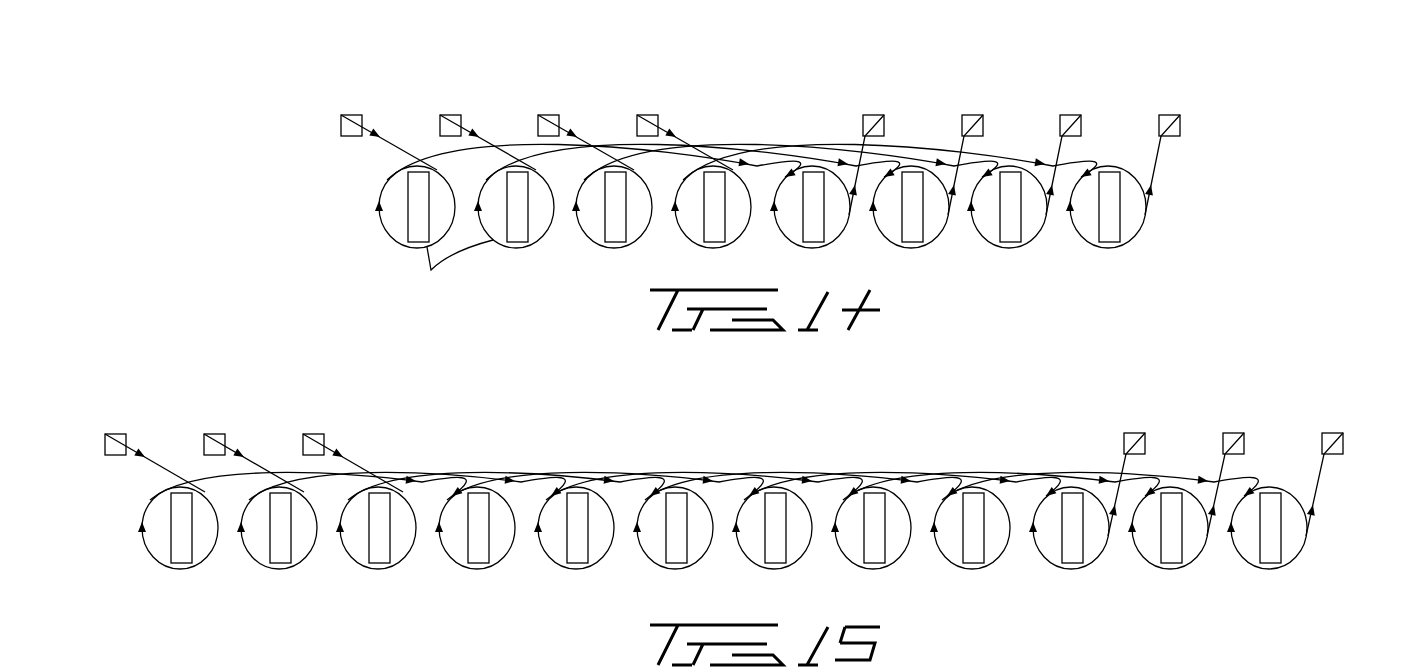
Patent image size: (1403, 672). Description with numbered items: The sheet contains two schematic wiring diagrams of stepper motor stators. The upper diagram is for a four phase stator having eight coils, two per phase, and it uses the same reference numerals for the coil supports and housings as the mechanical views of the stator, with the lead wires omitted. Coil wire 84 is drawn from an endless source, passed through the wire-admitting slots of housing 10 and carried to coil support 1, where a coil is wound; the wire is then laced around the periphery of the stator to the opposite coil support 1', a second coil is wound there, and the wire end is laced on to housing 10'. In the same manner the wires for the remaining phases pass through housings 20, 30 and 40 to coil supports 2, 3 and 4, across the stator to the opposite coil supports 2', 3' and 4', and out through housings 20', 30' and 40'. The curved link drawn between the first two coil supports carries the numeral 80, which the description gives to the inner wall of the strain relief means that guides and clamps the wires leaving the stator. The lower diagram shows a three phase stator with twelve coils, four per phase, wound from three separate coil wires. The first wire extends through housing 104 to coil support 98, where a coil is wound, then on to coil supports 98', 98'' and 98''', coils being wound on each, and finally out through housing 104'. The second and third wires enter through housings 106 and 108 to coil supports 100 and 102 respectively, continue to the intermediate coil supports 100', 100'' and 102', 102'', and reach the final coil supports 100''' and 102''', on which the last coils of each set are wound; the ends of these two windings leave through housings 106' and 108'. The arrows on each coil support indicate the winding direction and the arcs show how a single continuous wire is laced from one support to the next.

In FIG. 14, the housing 10 is at (389, 111).
In FIG. 14, the housing 20 is at (488, 111).
In FIG. 14, the housing 30 is at (586, 111).
In FIG. 14, the housing 40 is at (685, 111).
In FIG. 14, the housing 10' is at (890, 134).
In FIG. 14, the housing 20' is at (989, 134).
In FIG. 14, the housing 30' is at (1087, 134).
In FIG. 14, the housing 40' is at (1186, 134).
In FIG. 14, the coil support 1 is at (415, 224).
In FIG. 14, the coil support 2 is at (514, 224).
In FIG. 14, the coil support 3 is at (612, 224).
In FIG. 14, the coil support 4 is at (711, 224).
In FIG. 14, the coil support 1' is at (810, 224).
In FIG. 14, the coil support 2' is at (909, 224).
In FIG. 14, the coil support 3' is at (1007, 224).
In FIG. 14, the coil support 4' is at (1106, 224).
In FIG. 14, the coil wire 84 is at (371, 167).
In FIG. 14, the inner wall 80 is at (451, 269).
In FIG. 15, the housing 104 is at (155, 437).
In FIG. 15, the housing 106 is at (254, 437).
In FIG. 15, the housing 108 is at (353, 437).
In FIG. 15, the housing 104' is at (1149, 457).
In FIG. 15, the housing 106' is at (1248, 457).
In FIG. 15, the housing 108' is at (1347, 457).
In FIG. 15, the coil support 98 is at (178, 548).
In FIG. 15, the coil support 100 is at (275, 548).
In FIG. 15, the coil support 102 is at (374, 548).
In FIG. 15, the coil support 98' is at (475, 548).
In FIG. 15, the coil support 100' is at (571, 548).
In FIG. 15, the coil support 102' is at (670, 548).
In FIG. 15, the coil support 98'' is at (771, 548).
In FIG. 15, the coil support 100'' is at (867, 548).
In FIG. 15, the coil support 102'' is at (966, 548).
In FIG. 15, the coil support 98''' is at (1066, 548).
In FIG. 15, the coil support 100''' is at (1162, 548).
In FIG. 15, the coil support 102''' is at (1261, 548).